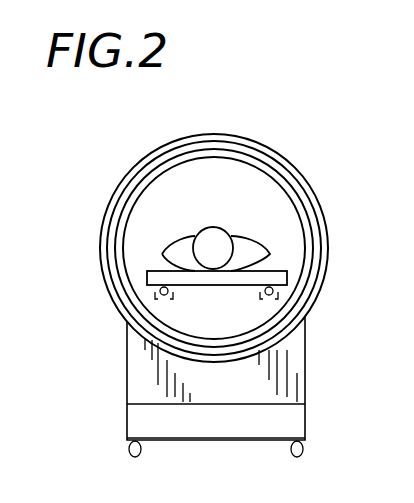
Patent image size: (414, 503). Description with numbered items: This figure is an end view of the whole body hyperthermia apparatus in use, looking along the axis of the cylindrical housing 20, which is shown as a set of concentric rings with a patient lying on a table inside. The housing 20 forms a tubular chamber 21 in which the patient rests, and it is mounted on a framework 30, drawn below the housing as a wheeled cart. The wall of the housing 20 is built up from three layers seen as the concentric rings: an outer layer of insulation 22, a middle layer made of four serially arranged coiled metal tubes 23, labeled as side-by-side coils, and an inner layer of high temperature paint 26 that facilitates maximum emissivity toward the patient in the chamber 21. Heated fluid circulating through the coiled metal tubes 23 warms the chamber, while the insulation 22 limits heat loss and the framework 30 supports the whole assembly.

The cylindrical housing 20 is at (107, 183).
The tubular chamber 21 is at (229, 180).
The outer layer of insulation 22 is at (167, 146).
The coiled metal tubes 23 is at (280, 166).
The inner layer of high temperature paint 26 is at (126, 282).
The framework 30 is at (127, 378).